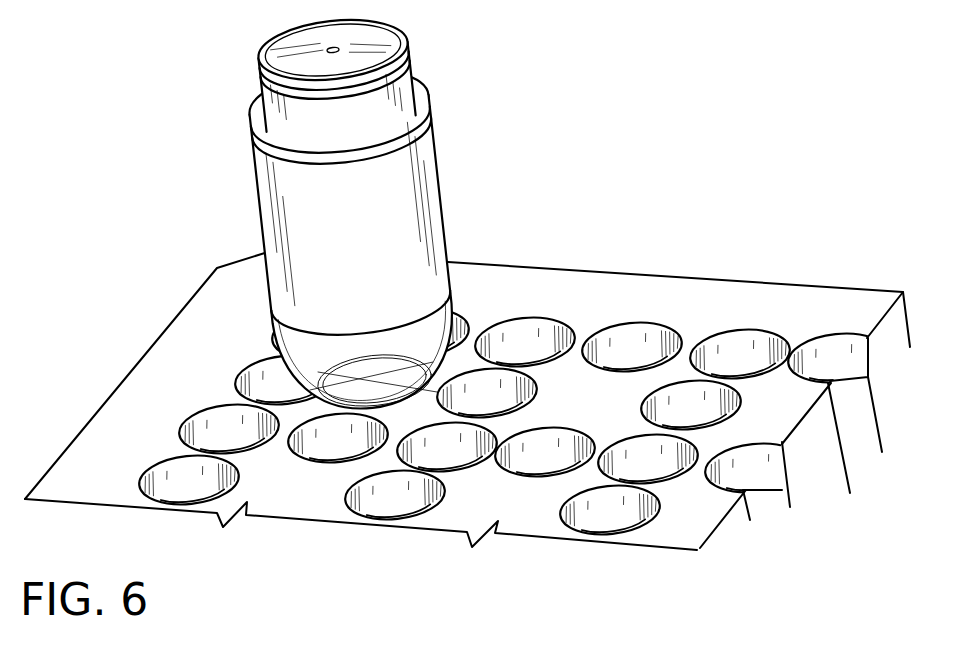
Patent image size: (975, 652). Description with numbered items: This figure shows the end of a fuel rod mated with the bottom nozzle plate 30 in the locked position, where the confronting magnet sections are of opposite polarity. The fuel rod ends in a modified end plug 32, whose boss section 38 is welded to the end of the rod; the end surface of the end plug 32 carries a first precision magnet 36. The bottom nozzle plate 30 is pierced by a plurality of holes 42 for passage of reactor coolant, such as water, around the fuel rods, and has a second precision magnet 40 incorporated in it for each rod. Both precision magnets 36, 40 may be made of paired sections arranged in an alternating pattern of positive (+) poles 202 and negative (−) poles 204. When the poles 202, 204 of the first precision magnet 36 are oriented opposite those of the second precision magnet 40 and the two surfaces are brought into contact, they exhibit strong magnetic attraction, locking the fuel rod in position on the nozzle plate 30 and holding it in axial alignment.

The bottom nozzle plate 30 is at (792, 296).
The end plug 32 is at (438, 197).
The first precision magnet 36 is at (367, 395).
The boss section 38 is at (412, 86).
The second precision magnet 40 is at (333, 375).
The holes 42 is at (628, 362).
The positive (+) pole 202 is at (330, 378).
The negative (−) pole 204 is at (328, 390).